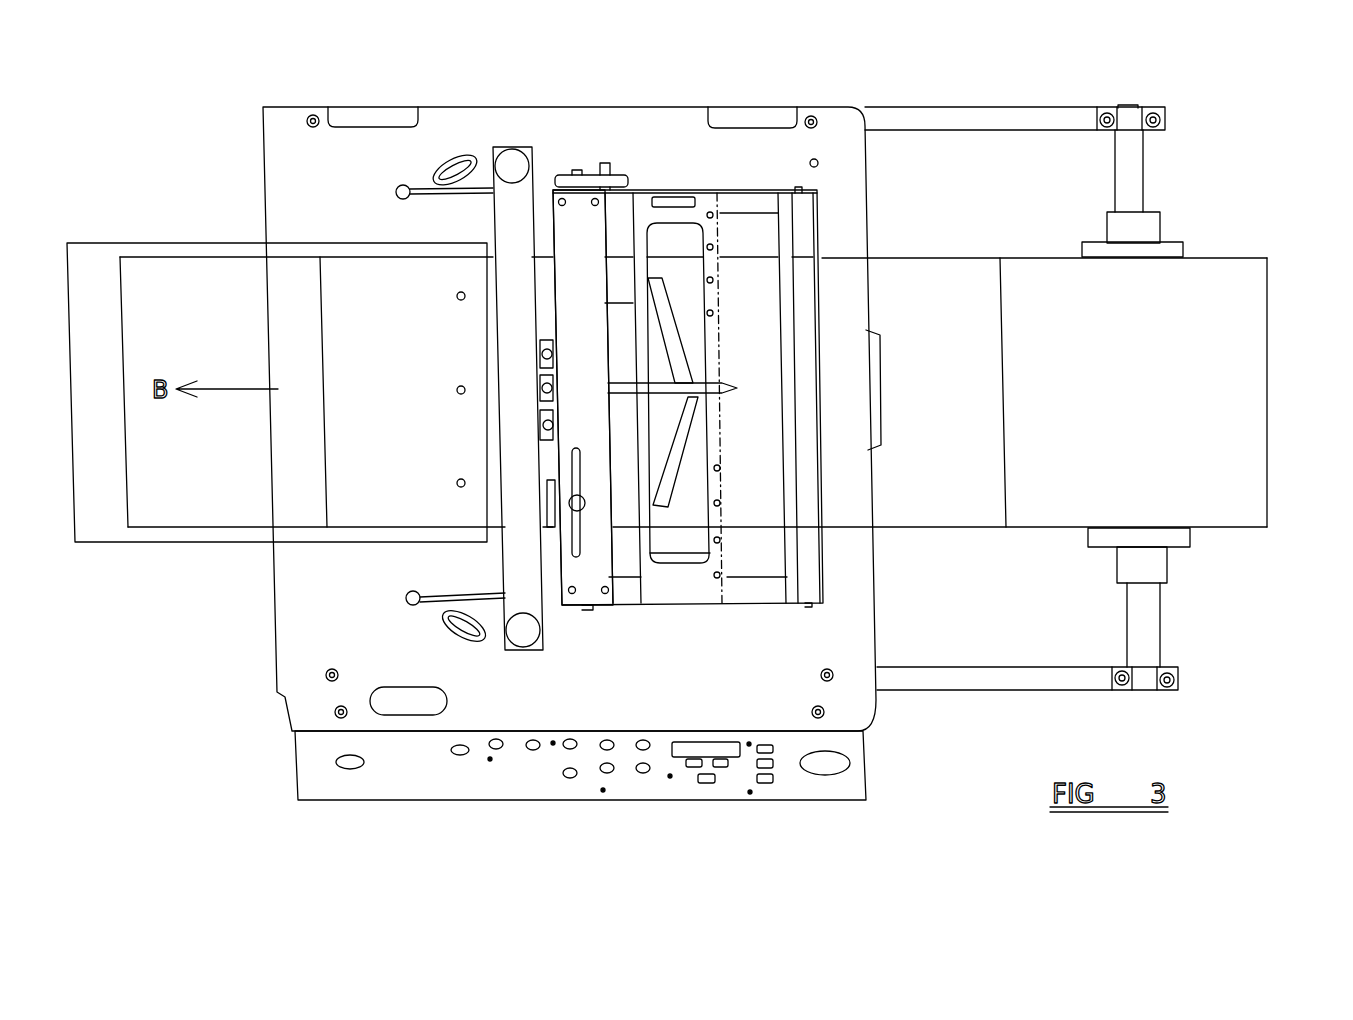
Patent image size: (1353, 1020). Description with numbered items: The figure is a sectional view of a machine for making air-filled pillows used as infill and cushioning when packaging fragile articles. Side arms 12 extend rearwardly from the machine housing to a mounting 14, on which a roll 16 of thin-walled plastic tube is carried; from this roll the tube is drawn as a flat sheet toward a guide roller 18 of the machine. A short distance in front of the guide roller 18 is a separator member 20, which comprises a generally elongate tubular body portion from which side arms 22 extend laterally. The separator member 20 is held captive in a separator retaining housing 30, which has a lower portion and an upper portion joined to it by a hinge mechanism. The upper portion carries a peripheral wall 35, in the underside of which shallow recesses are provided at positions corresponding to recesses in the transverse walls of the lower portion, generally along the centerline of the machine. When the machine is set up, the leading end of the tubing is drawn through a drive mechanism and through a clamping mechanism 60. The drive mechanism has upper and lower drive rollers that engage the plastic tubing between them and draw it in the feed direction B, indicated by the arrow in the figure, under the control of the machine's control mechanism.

The side arms 12 is at (988, 107).
The mounting 14 is at (1160, 562).
The roll 16 is at (1258, 419).
The guide roller 18 is at (800, 231).
The separator member 20 is at (731, 378).
The side arms 22 is at (678, 353).
The separator retaining housing 30 is at (663, 543).
The peripheral wall 35 is at (642, 432).
The clamping mechanism 60 is at (517, 235).